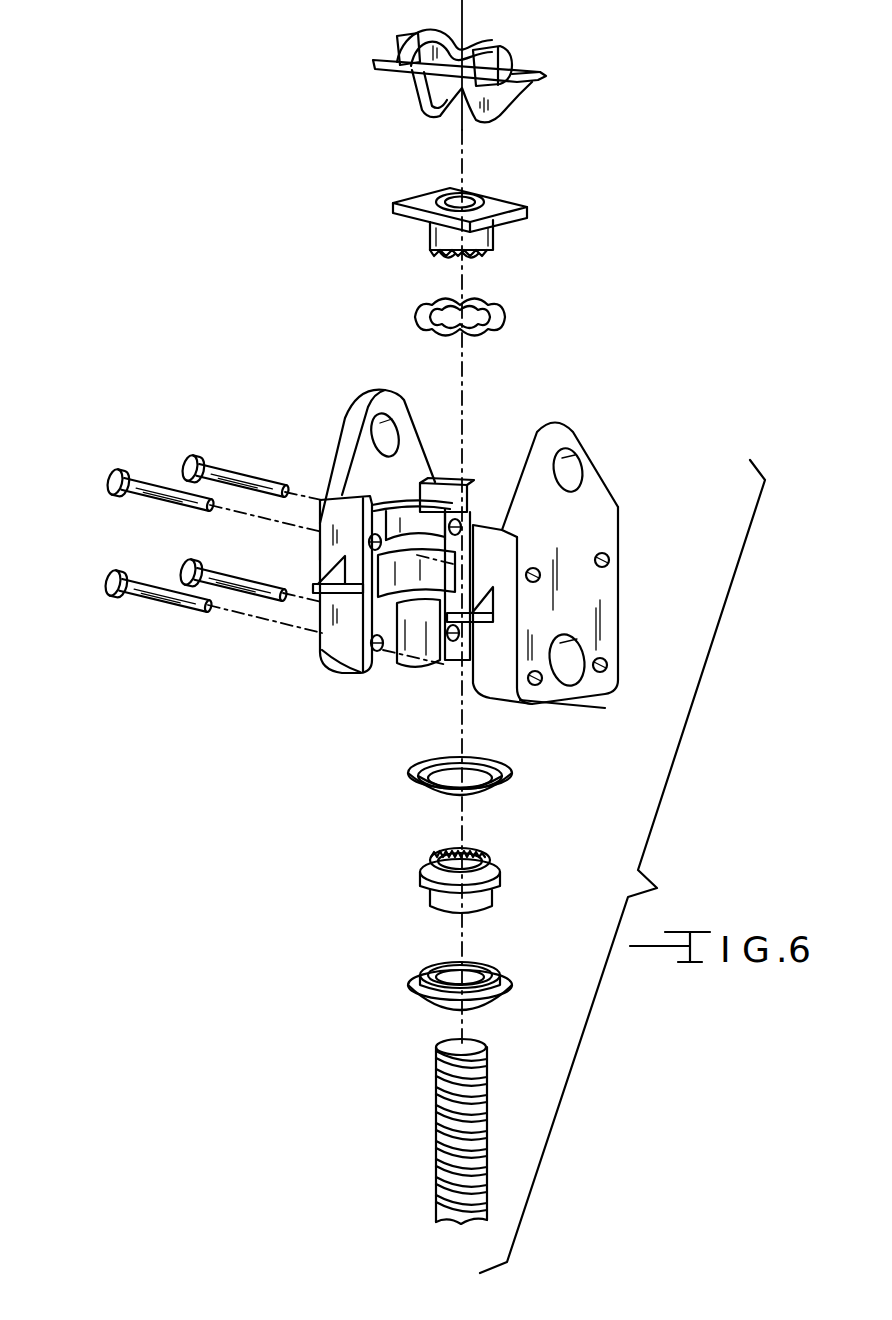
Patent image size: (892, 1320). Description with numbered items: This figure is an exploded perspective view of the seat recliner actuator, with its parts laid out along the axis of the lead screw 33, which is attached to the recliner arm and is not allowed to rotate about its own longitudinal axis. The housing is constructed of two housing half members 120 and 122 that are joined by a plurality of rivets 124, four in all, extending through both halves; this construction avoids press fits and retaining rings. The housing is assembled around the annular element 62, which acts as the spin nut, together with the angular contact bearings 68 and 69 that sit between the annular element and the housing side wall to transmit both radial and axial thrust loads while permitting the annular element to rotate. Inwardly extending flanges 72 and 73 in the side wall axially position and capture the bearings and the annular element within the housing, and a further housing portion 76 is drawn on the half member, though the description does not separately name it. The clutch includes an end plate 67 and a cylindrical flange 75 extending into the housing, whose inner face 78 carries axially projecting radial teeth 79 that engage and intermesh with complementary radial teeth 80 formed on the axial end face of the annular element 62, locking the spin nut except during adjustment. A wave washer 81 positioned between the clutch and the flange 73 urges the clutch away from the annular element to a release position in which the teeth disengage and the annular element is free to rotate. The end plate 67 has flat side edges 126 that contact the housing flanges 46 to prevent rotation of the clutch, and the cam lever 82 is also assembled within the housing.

The lead screw 33 is at (435, 1108).
The housing flanges 46 is at (593, 442).
The annular element 62 is at (423, 880).
The end plate 67 is at (410, 203).
The angular contact bearing 68 is at (507, 987).
The angular contact bearing 69 is at (517, 780).
The inwardly extending flange 72 is at (377, 620).
The inwardly extending flange 73 is at (428, 528).
The cylindrical flange 75 is at (493, 235).
The bracket ear 76 is at (420, 440).
The inner face 78 is at (467, 256).
The radial teeth 79 is at (447, 256).
The radial teeth 80 is at (437, 850).
The wave washer 81 is at (507, 327).
The cam lever 82 is at (497, 42).
The housing half member 120 is at (595, 518).
The housing half member 122 is at (320, 543).
The rivets 124 is at (160, 477).
The flat side edges 126 is at (442, 192).